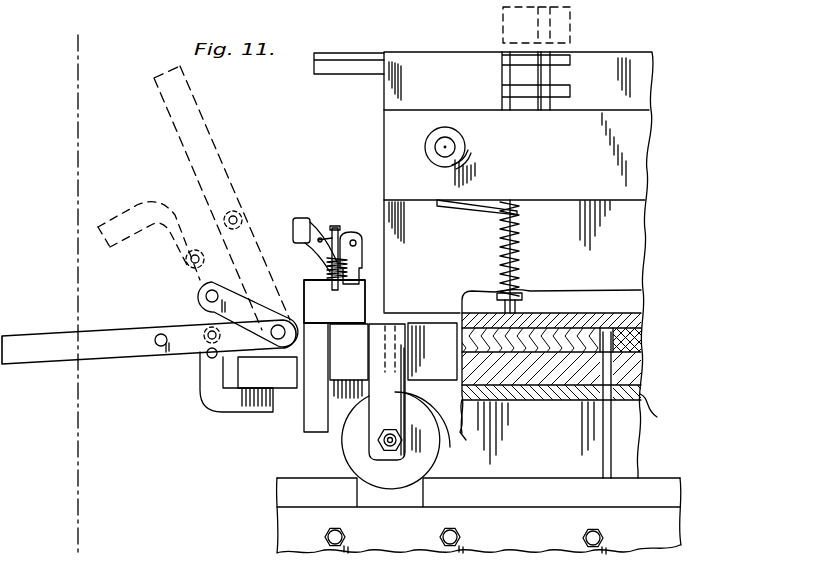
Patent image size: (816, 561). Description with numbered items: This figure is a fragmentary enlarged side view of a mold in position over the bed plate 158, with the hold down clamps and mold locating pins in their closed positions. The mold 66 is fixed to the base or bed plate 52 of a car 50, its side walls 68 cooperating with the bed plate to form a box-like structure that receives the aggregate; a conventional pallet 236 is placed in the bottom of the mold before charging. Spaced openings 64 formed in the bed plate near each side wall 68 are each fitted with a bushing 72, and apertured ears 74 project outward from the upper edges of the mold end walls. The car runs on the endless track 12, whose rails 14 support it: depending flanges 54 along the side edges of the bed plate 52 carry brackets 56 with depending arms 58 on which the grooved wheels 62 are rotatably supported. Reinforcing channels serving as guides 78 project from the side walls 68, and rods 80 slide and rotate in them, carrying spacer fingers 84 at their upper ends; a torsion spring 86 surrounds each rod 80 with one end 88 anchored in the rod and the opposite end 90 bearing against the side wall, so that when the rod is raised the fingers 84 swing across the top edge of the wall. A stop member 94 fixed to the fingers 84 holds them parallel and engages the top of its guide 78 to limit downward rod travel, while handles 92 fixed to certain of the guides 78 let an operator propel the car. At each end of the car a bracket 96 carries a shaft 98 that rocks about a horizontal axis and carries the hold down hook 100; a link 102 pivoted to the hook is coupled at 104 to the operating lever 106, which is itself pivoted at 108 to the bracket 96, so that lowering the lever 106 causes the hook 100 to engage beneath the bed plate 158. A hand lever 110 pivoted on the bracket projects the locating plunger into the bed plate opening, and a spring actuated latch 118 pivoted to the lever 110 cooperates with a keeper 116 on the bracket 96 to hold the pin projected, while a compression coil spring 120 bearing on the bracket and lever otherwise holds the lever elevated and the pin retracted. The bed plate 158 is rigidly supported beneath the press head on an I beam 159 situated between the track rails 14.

The endless track 12 is at (106, 52).
The rails 14 is at (618, 484).
The car 50 is at (563, 342).
The base or bed plate 52 is at (495, 337).
The depending flanges 54 is at (462, 428).
The brackets 56 is at (400, 330).
The depending arms 58 is at (409, 383).
The grooved wheels 62 is at (430, 453).
The spaced openings 64 is at (637, 315).
The mold 66 is at (624, 241).
The side walls 68 is at (623, 281).
The bushing 72 is at (628, 348).
The ears 74 is at (337, 68).
The guides 78 is at (627, 152).
The rods 80 is at (498, 287).
The spacer fingers 84 is at (567, 61).
The torsion spring 86 is at (516, 237).
The spring end 88 is at (513, 287).
The spring end 90 is at (454, 210).
The handles 92 is at (464, 148).
The stop member 94 is at (547, 104).
The brackets 96 is at (300, 290).
The shaft 98 is at (206, 297).
The hold down hook 100 is at (128, 212).
The link 102 is at (222, 220).
The pivot 104 is at (150, 362).
The operating lever 106 is at (100, 342).
The pivot 108 is at (285, 323).
The lever 110 is at (297, 220).
The keeper 116 is at (362, 282).
The spring actuated latch 118 is at (344, 230).
The compression coil spring 120 is at (325, 272).
The bed plate 158 is at (525, 370).
The I beam 159 is at (652, 420).
The pallet 236 is at (561, 310).